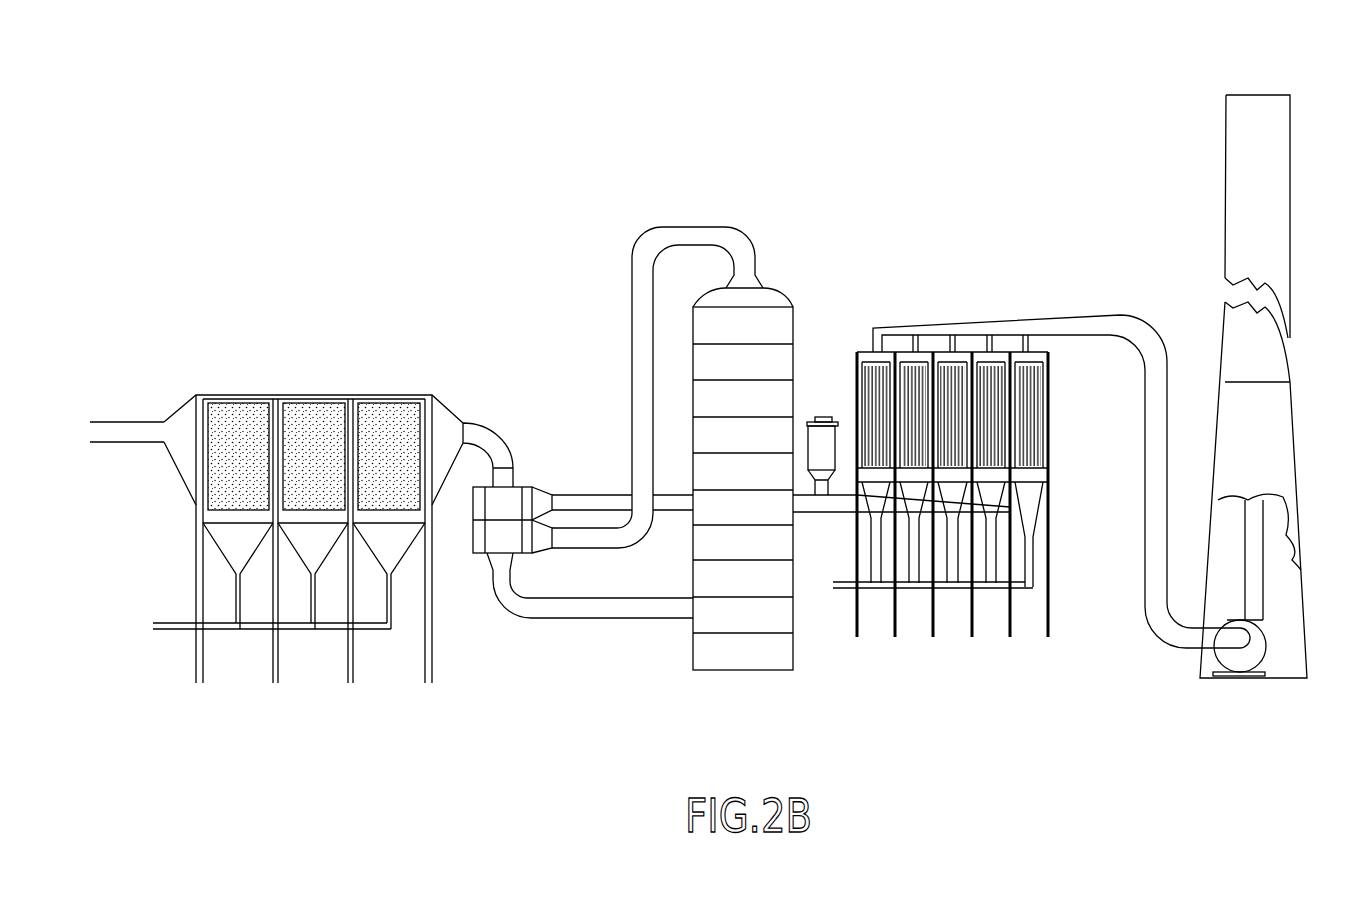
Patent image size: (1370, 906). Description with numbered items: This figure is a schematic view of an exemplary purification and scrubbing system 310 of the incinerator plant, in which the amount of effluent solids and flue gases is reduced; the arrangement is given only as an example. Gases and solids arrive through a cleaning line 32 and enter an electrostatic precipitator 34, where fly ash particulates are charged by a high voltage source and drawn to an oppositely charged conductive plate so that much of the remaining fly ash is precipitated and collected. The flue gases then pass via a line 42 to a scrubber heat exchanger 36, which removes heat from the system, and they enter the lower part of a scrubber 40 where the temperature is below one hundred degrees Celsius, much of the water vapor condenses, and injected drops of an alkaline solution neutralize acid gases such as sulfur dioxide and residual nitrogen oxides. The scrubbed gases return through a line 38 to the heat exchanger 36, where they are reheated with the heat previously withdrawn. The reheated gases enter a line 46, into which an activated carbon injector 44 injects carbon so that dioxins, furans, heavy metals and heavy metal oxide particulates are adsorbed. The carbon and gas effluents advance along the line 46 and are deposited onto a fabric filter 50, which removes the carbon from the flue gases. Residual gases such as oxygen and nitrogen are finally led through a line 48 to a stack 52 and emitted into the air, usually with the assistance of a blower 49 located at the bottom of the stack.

The purification and scrubbing system 310 is at (728, 390).
The cleaning line 32 is at (129, 422).
The electrostatic precipitator 34 is at (305, 410).
The scrubber heat exchanger 36 is at (507, 495).
The line 38 is at (695, 228).
The scrubber 40 is at (780, 655).
The line 42 is at (480, 420).
The activated carbon injector 44 is at (825, 452).
The line 46 is at (818, 513).
The line 48 is at (1080, 318).
The blower 49 is at (1255, 648).
The fabric filter 50 is at (1035, 433).
The stack 52 is at (1272, 432).